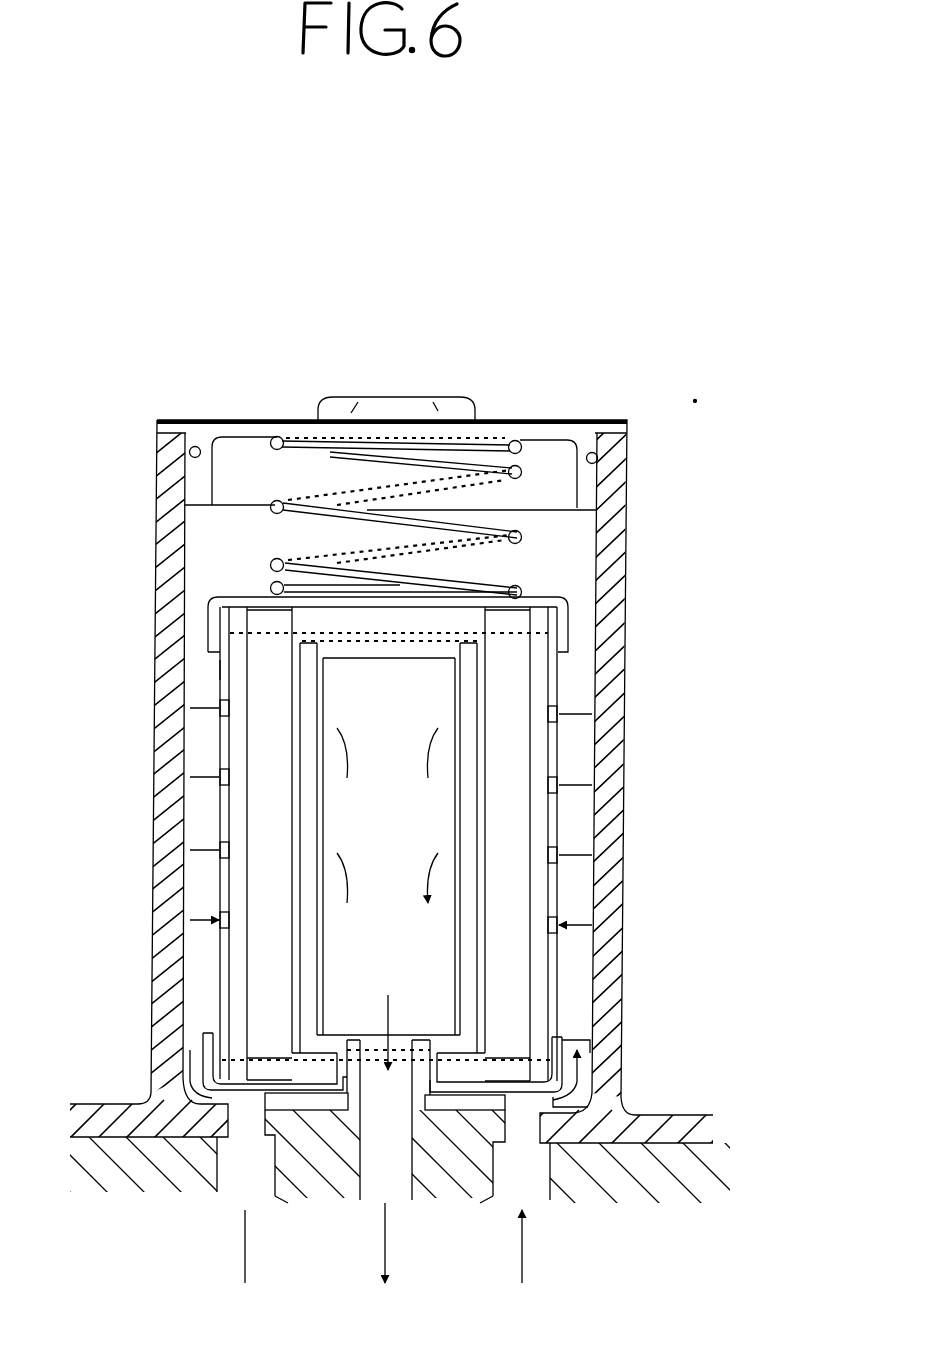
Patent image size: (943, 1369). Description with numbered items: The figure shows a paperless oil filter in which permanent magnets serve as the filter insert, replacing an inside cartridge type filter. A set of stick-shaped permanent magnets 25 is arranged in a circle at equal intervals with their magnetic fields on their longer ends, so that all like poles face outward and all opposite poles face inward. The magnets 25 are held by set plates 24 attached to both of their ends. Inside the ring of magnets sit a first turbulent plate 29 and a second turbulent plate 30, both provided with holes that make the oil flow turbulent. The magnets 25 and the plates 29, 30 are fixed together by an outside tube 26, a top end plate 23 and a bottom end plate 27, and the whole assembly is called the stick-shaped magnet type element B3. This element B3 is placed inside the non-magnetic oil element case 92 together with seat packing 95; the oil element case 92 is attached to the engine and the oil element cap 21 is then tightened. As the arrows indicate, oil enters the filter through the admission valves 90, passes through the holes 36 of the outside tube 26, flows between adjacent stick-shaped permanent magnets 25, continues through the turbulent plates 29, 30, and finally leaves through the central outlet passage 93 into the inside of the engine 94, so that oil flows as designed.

The oil element cap 21 is at (525, 420).
The top end plate 23 is at (573, 628).
The set plates 24 is at (540, 622).
The stick-shaped permanent magnets 25 is at (507, 687).
The outside tube 26 is at (555, 893).
The bottom end plate 27 is at (560, 1048).
The first turbulent plate 29 is at (480, 827).
The second turbulent plate 30 is at (460, 753).
The holes 36 is at (555, 935).
The stick-shaped magnet type element B3 is at (222, 666).
The oil element case 92 is at (153, 790).
The central outlet duct 93 is at (393, 1187).
The engine 94 is at (132, 1165).
The seat packing 95 is at (312, 1110).
The admission valves 90 is at (240, 1180).